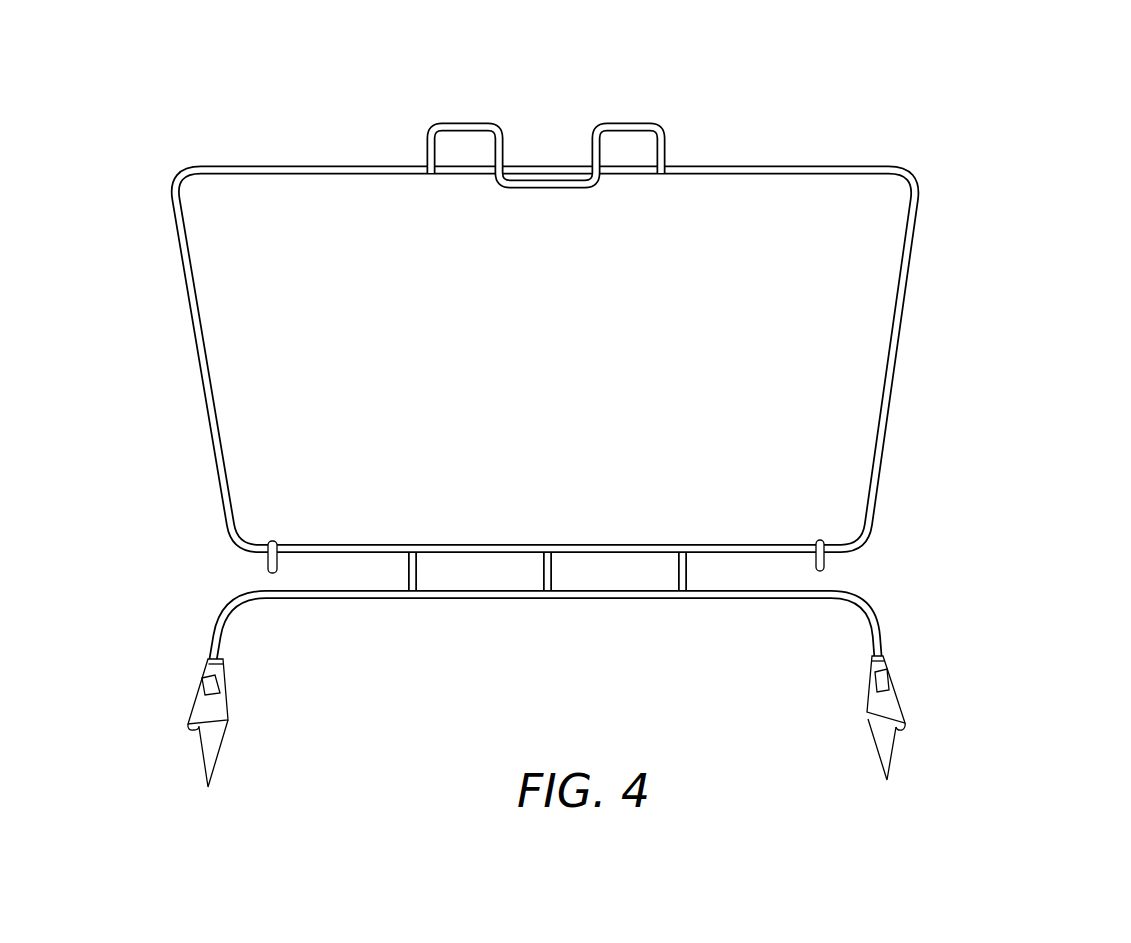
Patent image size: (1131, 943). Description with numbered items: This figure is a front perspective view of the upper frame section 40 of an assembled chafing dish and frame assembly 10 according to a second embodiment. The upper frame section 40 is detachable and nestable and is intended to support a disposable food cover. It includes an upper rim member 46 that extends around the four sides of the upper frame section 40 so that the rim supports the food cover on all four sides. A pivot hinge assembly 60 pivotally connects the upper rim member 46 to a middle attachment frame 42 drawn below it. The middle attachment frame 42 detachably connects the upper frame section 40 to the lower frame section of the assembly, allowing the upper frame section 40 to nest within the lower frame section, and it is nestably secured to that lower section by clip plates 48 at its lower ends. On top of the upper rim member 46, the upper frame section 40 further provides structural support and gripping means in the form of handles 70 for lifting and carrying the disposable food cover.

The chafing dish and frame assembly 10 is at (1033, 130).
The upper frame section 40 is at (607, 371).
The middle attachment frame 42 is at (886, 642).
The upper rim member 46 is at (892, 327).
The clip plates 48 is at (211, 724).
The pivot hinge assembly 60 is at (722, 575).
The handles 70 is at (629, 127).